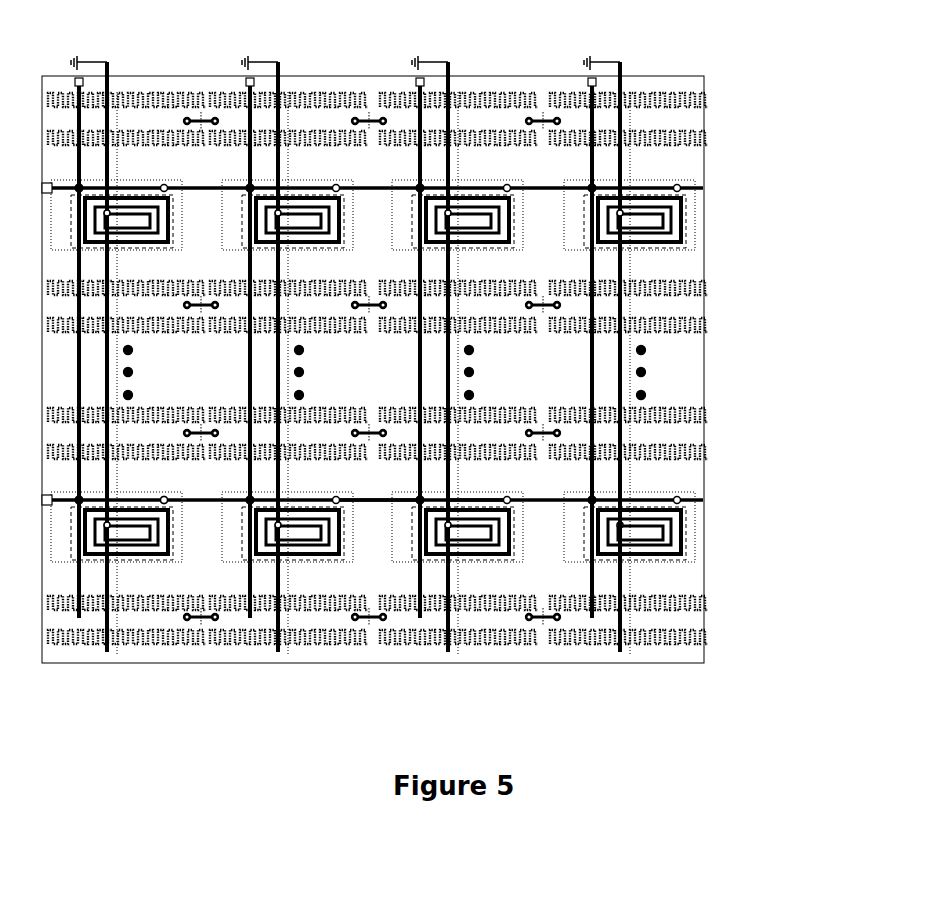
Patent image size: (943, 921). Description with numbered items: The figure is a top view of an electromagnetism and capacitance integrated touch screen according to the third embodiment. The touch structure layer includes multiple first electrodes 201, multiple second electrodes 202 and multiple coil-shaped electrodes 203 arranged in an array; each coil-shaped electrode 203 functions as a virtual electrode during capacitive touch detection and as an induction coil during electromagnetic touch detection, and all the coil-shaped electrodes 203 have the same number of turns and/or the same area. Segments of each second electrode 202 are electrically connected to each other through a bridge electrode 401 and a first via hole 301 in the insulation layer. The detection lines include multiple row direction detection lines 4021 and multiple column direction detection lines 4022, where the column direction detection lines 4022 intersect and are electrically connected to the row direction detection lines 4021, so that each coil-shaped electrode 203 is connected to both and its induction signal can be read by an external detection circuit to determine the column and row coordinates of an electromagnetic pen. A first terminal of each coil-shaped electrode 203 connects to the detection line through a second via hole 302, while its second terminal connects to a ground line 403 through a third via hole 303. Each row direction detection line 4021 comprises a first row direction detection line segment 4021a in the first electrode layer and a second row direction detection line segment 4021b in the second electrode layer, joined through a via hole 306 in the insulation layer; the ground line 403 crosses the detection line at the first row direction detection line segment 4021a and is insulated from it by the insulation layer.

The first electrode 201 is at (512, 153).
The second electrode 202 is at (652, 118).
The coil-shaped electrode 203 is at (682, 230).
The first via hole 301 is at (355, 117).
The second via hole 302 is at (593, 188).
The third via hole 303 is at (617, 217).
The via hole 306 is at (163, 500).
The bridge electrode 401 is at (542, 117).
The ground line 403 is at (623, 257).
The row direction detection line 4021 is at (692, 498).
The first row direction detection line segment 4021a is at (492, 498).
The second row direction detection line segment 4021b is at (363, 503).
The column direction detection line 4022 is at (593, 310).